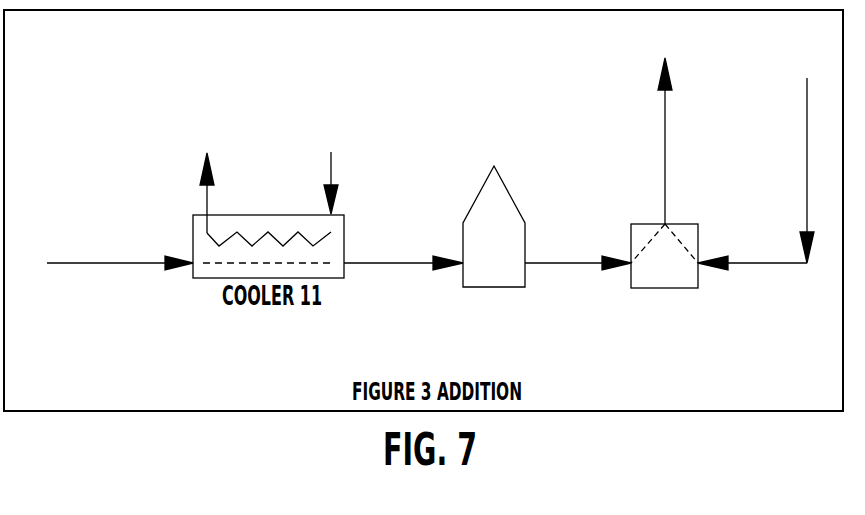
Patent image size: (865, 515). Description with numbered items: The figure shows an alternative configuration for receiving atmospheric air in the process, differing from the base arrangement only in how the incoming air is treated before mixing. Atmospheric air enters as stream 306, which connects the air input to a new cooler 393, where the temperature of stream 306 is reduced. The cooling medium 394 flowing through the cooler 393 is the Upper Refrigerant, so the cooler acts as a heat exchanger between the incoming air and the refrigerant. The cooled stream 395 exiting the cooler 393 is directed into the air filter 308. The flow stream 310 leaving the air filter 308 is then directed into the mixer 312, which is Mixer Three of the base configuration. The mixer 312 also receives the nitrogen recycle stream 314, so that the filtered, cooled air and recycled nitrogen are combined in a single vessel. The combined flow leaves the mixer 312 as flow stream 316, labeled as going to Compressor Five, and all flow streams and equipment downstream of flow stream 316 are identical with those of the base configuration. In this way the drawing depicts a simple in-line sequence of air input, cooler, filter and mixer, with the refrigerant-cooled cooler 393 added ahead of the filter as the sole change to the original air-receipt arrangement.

The atmospheric air input stream 306 is at (138, 265).
The cooler 393 is at (231, 215).
The cooling medium 394 is at (331, 160).
The cooled air stream 395 is at (389, 265).
The air filter 308 is at (512, 202).
The filtered air flow stream 310 is at (560, 265).
The mixer 312 is at (697, 224).
The mixed flow stream 316 is at (665, 152).
The nitrogen recycle stream 314 is at (807, 153).